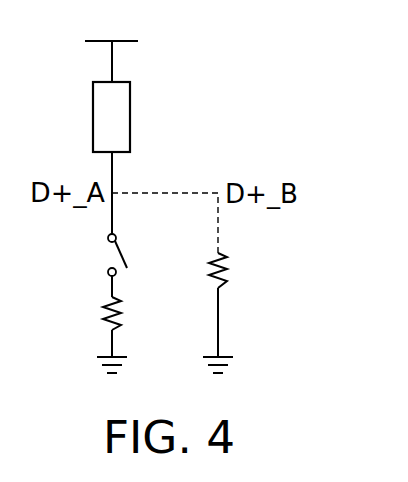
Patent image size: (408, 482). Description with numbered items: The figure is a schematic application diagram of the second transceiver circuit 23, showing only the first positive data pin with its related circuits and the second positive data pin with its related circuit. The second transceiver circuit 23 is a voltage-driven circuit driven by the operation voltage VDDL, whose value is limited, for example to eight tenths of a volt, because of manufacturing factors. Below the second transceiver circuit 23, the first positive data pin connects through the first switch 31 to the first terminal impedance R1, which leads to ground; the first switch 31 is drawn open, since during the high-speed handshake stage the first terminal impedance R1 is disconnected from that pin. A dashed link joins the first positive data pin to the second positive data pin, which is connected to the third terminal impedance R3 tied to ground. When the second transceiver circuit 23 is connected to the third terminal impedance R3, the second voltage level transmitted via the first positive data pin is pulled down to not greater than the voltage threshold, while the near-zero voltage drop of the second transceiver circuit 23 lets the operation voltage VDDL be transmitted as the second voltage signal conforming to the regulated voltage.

The second transceiver circuit 23 is at (130, 113).
The first switch 31 is at (117, 256).
The first terminal impedance R1 is at (93, 314).
The third terminal impedance R3 is at (235, 272).
The operation voltage VDDL is at (110, 23).